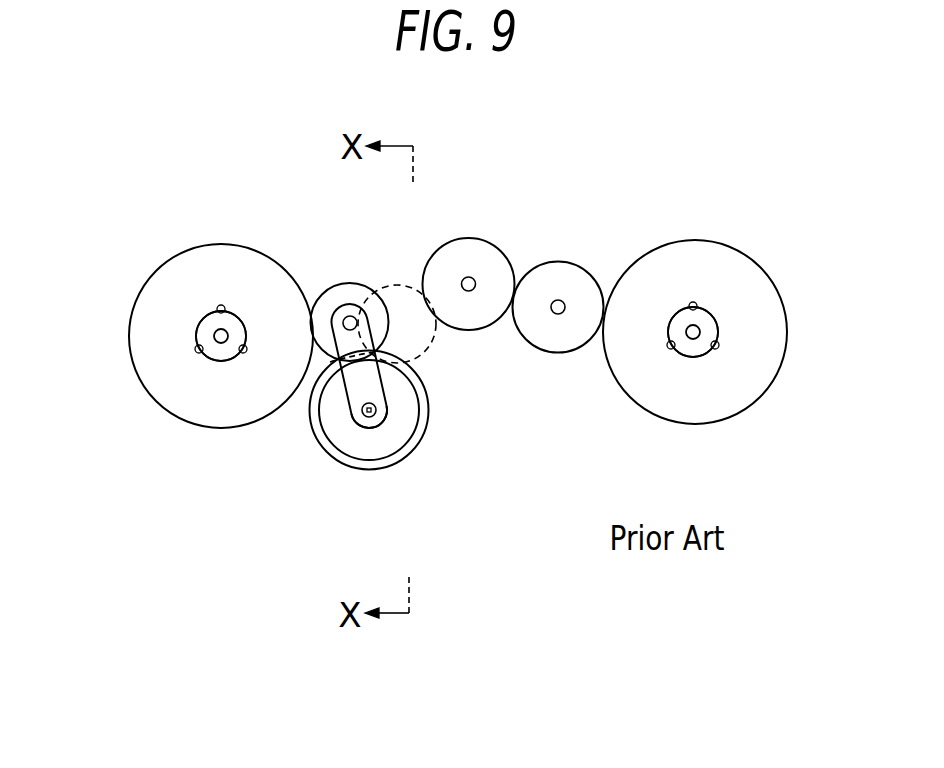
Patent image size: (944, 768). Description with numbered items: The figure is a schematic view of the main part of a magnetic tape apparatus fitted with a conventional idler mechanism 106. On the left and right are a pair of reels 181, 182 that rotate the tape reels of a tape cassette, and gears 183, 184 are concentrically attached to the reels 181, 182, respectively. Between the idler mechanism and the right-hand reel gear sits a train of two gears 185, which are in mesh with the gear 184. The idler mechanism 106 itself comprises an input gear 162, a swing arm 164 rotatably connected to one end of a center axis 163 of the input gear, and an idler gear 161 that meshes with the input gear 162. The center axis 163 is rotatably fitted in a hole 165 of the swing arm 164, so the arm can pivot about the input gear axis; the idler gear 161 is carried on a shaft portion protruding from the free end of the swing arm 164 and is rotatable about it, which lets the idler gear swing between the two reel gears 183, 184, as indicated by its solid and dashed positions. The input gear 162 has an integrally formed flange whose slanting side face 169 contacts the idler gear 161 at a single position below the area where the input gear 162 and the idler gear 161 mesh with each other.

The idler mechanism 106 is at (270, 502).
The idler gear 161 is at (352, 281).
The input gear 162 is at (407, 408).
The center axis 163 is at (380, 421).
The swing arm 164 is at (372, 378).
The hole 165 is at (370, 417).
The slanting side face 169 is at (418, 438).
The reel 181 is at (198, 324).
The reel 182 is at (713, 315).
The gear 183 is at (223, 243).
The gear 184 is at (695, 240).
The train of gears 185 is at (472, 238).